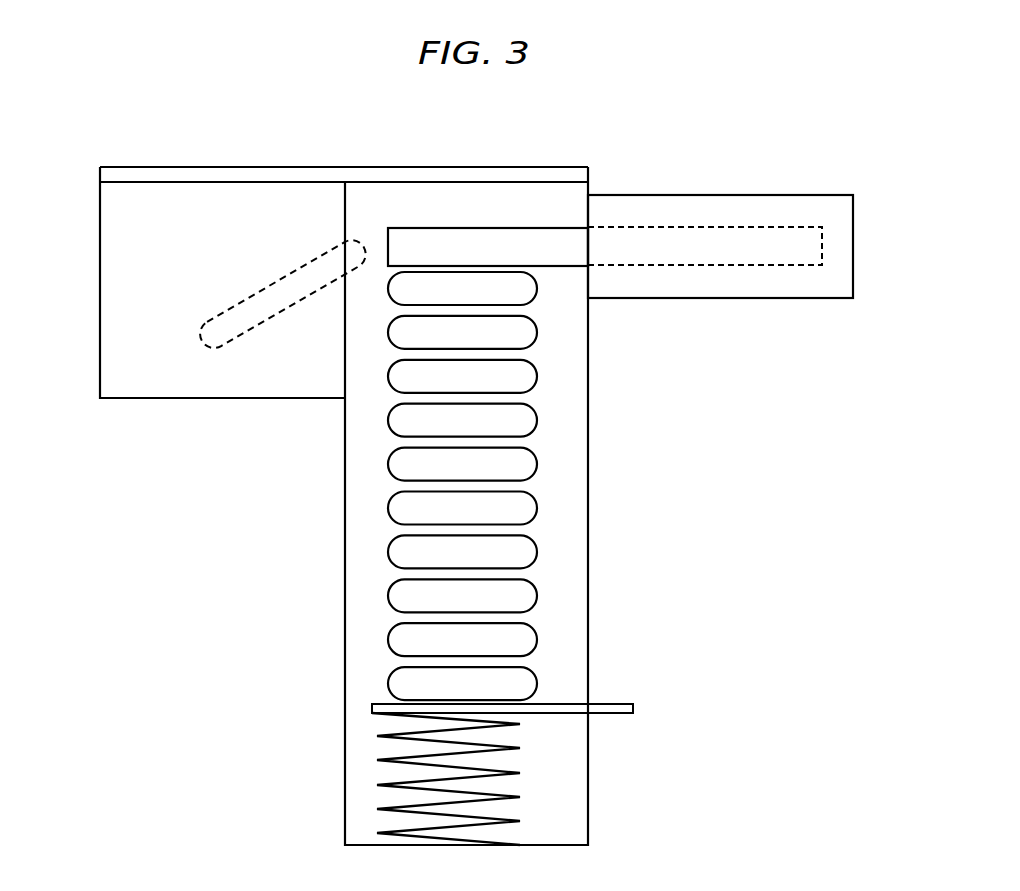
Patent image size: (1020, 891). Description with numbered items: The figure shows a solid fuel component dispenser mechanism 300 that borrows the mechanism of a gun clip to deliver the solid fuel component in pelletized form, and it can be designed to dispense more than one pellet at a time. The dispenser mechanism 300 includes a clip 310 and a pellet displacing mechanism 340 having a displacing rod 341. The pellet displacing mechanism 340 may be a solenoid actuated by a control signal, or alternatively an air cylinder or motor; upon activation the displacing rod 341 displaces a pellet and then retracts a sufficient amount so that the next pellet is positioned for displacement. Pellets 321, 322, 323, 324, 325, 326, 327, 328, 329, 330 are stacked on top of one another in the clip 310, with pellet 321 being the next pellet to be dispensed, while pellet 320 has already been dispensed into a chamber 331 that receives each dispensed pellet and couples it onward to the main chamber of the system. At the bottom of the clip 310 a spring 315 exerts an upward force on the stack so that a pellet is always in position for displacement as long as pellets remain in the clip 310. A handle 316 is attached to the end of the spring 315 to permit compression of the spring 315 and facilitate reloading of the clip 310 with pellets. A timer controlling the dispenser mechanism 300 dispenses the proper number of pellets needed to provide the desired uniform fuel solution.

The dispenser mechanism 300 is at (315, 137).
The clip 310 is at (590, 512).
The spring 315 is at (503, 798).
The handle 316 is at (628, 704).
The pellet 320 is at (255, 292).
The pellet 321 is at (462, 288).
The pellet 322 is at (462, 332).
The pellet 323 is at (462, 376).
The pellet 324 is at (462, 420).
The pellet 325 is at (462, 464).
The pellet 326 is at (462, 508).
The pellet 327 is at (462, 551).
The pellet 328 is at (462, 595).
The pellet 329 is at (462, 639).
The pellet 330 is at (462, 683).
The chamber 331 is at (99, 323).
The pellet displacing mechanism 340 is at (853, 238).
The displacing rod 341 is at (525, 228).